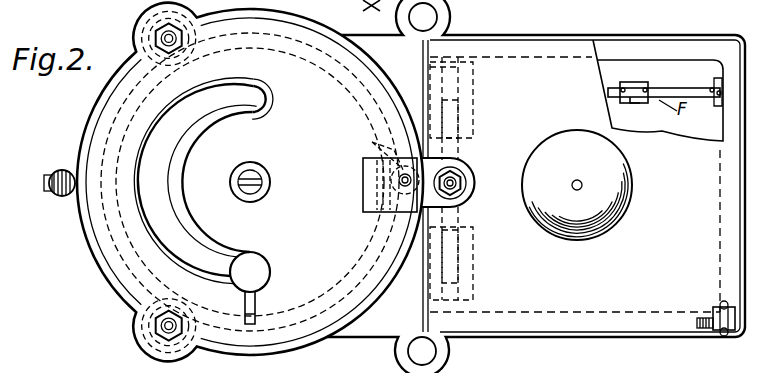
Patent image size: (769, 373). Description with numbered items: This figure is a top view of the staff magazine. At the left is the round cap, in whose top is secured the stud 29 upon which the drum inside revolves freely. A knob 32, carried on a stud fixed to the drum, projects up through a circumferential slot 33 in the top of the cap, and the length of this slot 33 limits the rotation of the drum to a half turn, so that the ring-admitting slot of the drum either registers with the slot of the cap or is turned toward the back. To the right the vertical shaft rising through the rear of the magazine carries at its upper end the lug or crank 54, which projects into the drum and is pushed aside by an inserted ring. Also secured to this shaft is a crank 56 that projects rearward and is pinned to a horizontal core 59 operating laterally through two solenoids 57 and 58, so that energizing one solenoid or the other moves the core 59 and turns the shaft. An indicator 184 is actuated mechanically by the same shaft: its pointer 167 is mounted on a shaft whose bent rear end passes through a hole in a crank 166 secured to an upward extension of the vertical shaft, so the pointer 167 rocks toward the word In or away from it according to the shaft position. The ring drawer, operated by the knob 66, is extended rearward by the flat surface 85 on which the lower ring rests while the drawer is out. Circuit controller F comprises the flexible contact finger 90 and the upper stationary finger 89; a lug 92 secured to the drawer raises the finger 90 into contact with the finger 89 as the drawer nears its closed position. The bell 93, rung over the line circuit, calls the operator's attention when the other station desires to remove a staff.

The stud 29 is at (258, 174).
The knob 32 is at (250, 288).
The circumferential slot 33 is at (163, 178).
The lug or crank 54 is at (372, 184).
The crank 56 is at (463, 191).
The solenoid 57 is at (466, 115).
The solenoid 58 is at (462, 276).
The horizontal core 59 is at (452, 150).
The knob 66 is at (62, 198).
The flat surface 85 is at (658, 90).
The upper stationary contact finger 89 is at (668, 94).
The flexible contact finger 90 is at (627, 81).
The lug 92 is at (630, 101).
The bell 93 is at (577, 185).
The crank 166 is at (405, 167).
The pointer 167 is at (373, 172).
The indicator 184 is at (350, 225).